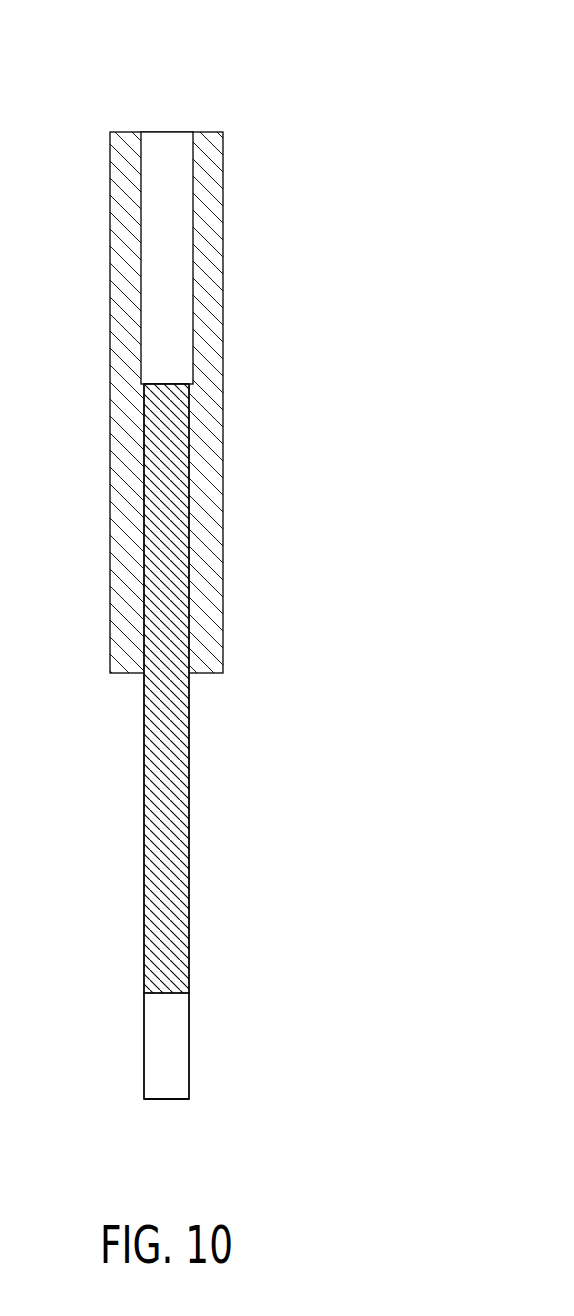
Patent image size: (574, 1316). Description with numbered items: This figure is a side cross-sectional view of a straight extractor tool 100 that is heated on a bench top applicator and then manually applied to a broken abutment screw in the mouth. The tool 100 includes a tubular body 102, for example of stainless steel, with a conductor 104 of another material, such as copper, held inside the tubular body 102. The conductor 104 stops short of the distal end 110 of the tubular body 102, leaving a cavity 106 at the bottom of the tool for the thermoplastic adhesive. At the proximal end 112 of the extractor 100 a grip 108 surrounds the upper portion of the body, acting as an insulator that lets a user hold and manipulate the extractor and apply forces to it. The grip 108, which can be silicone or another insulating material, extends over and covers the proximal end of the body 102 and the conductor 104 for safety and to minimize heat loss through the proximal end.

The extractor tool 100 is at (155, 586).
The tubular body 102 is at (200, 778).
The conductor 104 is at (165, 838).
The cavity 106 is at (167, 1029).
The grip 108 is at (215, 373).
The distal end 110 is at (168, 1101).
The proximal end 112 is at (163, 132).